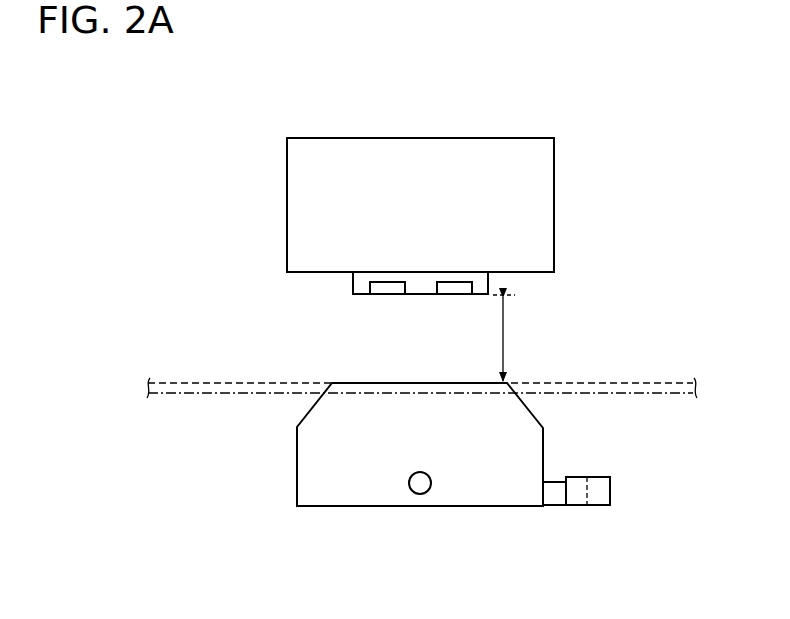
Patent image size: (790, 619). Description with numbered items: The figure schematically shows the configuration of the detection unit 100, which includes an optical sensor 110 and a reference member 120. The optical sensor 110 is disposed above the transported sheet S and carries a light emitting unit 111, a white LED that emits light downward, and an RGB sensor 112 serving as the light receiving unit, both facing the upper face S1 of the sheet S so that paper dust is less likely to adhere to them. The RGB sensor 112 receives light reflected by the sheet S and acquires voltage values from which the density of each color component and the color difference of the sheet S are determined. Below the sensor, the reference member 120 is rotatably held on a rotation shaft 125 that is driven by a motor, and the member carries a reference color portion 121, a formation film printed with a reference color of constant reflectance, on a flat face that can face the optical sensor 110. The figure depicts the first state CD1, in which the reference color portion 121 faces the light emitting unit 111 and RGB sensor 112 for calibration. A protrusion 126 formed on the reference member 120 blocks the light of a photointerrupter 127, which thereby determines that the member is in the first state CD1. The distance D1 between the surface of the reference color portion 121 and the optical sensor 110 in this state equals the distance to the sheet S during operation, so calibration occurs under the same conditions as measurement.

The detection unit 100 is at (243, 103).
The optical sensor 110 is at (330, 145).
The light emitting unit 111 is at (385, 287).
The RGB sensor 112 is at (452, 287).
The distance between reference color portion and optical sensor D1 is at (517, 338).
The sheet S is at (186, 380).
The upper face of the sheet S1 is at (228, 380).
The reference member 120 is at (332, 500).
The reference color portion 121 is at (362, 381).
The rotation shaft 125 is at (415, 471).
The protrusion 126 is at (552, 489).
The photointerrupter 127 is at (605, 488).
The first state CD1 is at (531, 524).